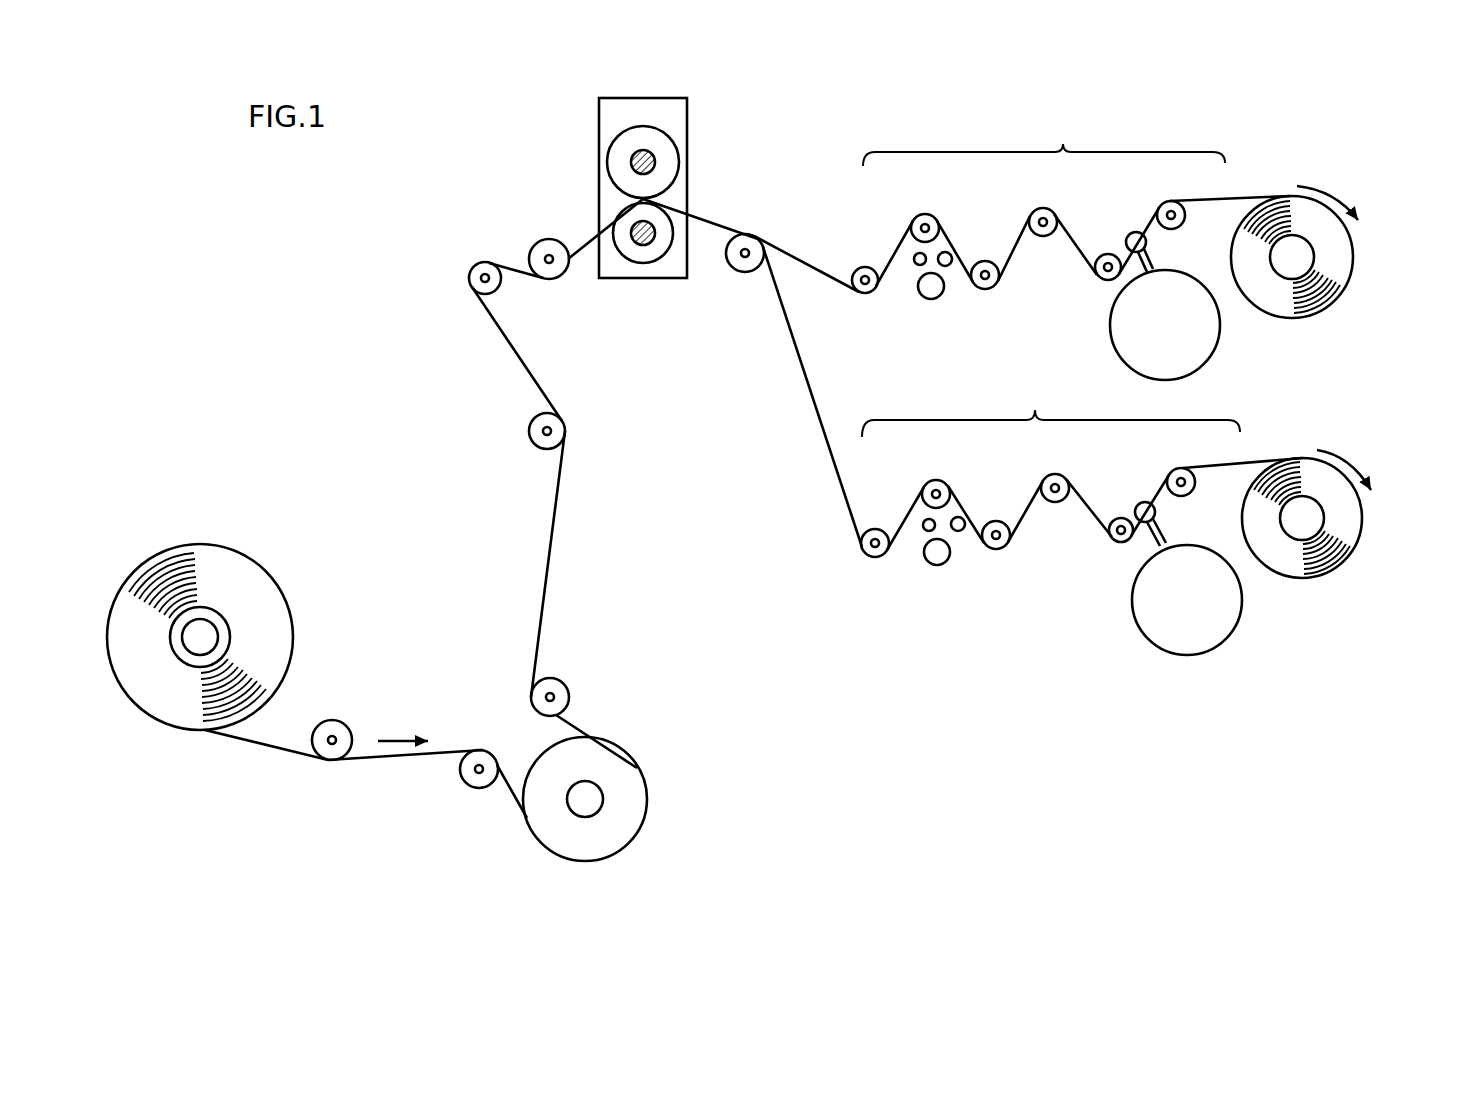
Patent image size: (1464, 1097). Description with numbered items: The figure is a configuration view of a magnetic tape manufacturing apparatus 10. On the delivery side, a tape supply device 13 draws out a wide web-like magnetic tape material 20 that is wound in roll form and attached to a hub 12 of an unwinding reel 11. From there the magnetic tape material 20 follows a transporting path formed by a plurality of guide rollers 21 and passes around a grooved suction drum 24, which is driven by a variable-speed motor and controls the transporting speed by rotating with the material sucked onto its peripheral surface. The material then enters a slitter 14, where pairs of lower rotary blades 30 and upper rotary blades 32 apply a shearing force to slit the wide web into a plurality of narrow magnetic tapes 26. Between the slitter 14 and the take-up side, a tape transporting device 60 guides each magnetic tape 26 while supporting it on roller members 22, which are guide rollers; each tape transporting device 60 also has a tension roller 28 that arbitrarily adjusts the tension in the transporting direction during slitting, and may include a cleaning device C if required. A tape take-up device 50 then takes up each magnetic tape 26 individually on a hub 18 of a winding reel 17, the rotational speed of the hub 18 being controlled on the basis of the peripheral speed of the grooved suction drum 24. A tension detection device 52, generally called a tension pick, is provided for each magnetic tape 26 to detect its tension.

The magnetic tape manufacturing apparatus 10 is at (810, 162).
The unwinding reel 11 is at (248, 530).
The hub 12 is at (228, 635).
The tape supply device 13 is at (247, 763).
The slitter 14 is at (697, 160).
The winding reel 17 is at (1290, 165).
The hub 18 is at (1300, 258).
The magnetic tape material 20 is at (268, 746).
The guide rollers 21 is at (343, 722).
The roller members 22 is at (752, 243).
The grooved suction drum 24 is at (632, 768).
The magnetic tape 26 is at (826, 272).
The tension roller 28 is at (860, 294).
The lower rotary blade 30 is at (643, 252).
The upper rotary blade 32 is at (643, 130).
The tape take-up device 50 is at (1375, 342).
The tension detection device 52 is at (1220, 357).
The tape transporting device 60 is at (1051, 273).
The cleaning device C is at (948, 298).